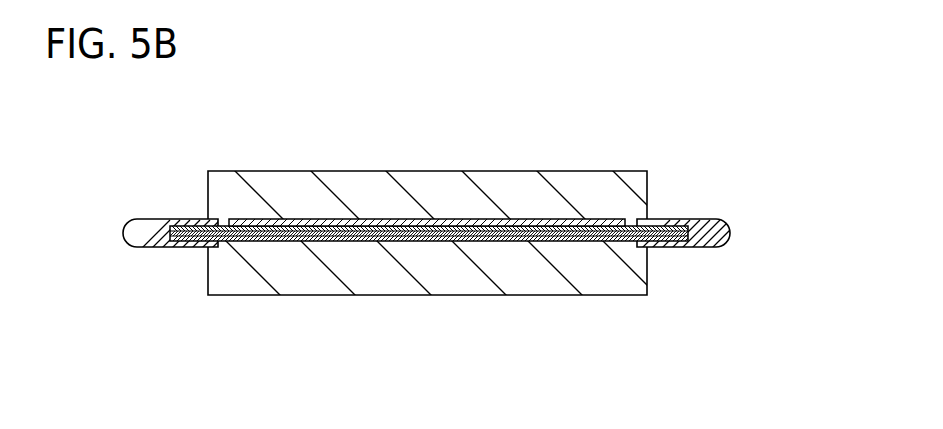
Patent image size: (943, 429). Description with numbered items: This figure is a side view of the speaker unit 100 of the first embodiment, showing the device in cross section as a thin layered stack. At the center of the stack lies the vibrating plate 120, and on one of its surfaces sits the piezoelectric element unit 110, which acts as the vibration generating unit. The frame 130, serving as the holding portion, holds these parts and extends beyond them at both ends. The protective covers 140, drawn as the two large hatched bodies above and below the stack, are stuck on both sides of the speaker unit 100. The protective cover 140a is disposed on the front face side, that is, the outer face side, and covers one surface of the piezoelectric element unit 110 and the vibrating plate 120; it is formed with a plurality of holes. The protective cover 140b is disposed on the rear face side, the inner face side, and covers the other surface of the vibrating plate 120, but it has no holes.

The speaker unit 100 is at (712, 186).
The piezoelectric element unit 110 is at (603, 219).
The vibrating plate 120 is at (590, 237).
The frame 130 is at (732, 233).
The protective covers 140 is at (407, 93).
The protective cover 140a is at (292, 207).
The protective cover 140b is at (371, 277).